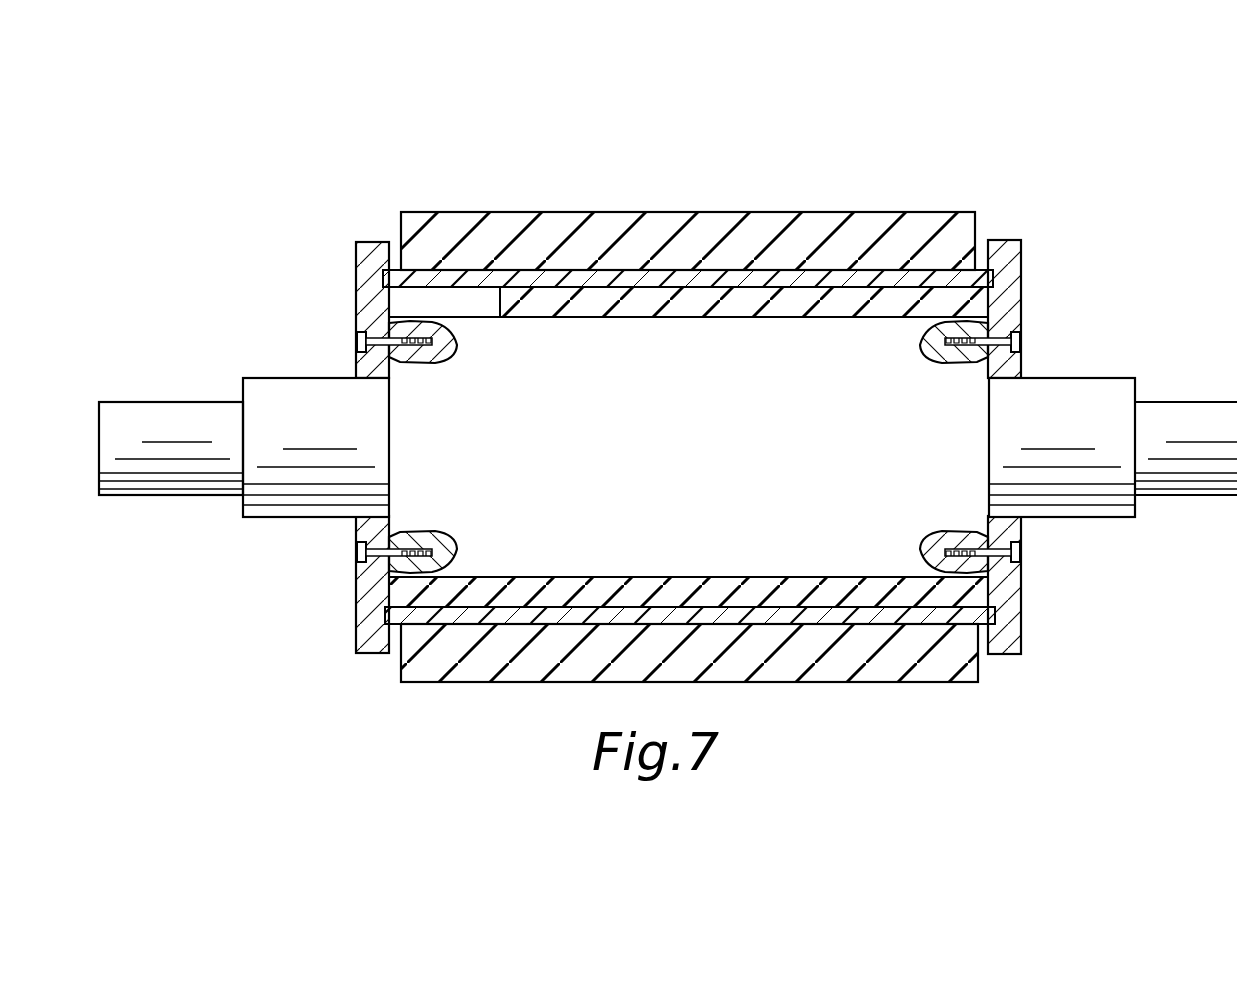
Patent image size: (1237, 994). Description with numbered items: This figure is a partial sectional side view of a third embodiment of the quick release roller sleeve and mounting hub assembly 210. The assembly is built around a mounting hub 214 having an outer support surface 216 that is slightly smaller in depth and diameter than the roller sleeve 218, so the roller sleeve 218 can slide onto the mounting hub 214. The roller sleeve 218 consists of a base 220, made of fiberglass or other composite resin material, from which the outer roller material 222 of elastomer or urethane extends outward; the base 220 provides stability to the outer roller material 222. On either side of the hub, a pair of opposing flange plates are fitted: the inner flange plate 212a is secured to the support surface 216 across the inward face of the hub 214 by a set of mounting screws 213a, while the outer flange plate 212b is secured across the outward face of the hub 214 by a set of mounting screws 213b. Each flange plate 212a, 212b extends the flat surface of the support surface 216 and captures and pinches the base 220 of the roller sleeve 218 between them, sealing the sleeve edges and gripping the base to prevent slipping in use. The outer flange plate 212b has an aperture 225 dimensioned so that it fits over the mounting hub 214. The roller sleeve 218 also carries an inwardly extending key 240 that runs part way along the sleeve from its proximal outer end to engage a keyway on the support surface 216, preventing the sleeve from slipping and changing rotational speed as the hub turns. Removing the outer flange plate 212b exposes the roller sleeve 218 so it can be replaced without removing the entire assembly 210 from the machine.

The quick release roller sleeve and mounting hub assembly 210 is at (215, 113).
The roller sleeve 218 is at (641, 205).
The outer roller material 222 is at (700, 212).
The base 220 is at (840, 277).
The outer support surface 216 is at (641, 318).
The key 240 is at (473, 297).
The inner flange plate 212a is at (1013, 275).
The outer flange plate 212b is at (364, 263).
The mounting screws 213a is at (1020, 330).
The mounting screws 213b is at (360, 338).
The aperture 225 is at (367, 378).
The mounting hub 214 is at (250, 508).